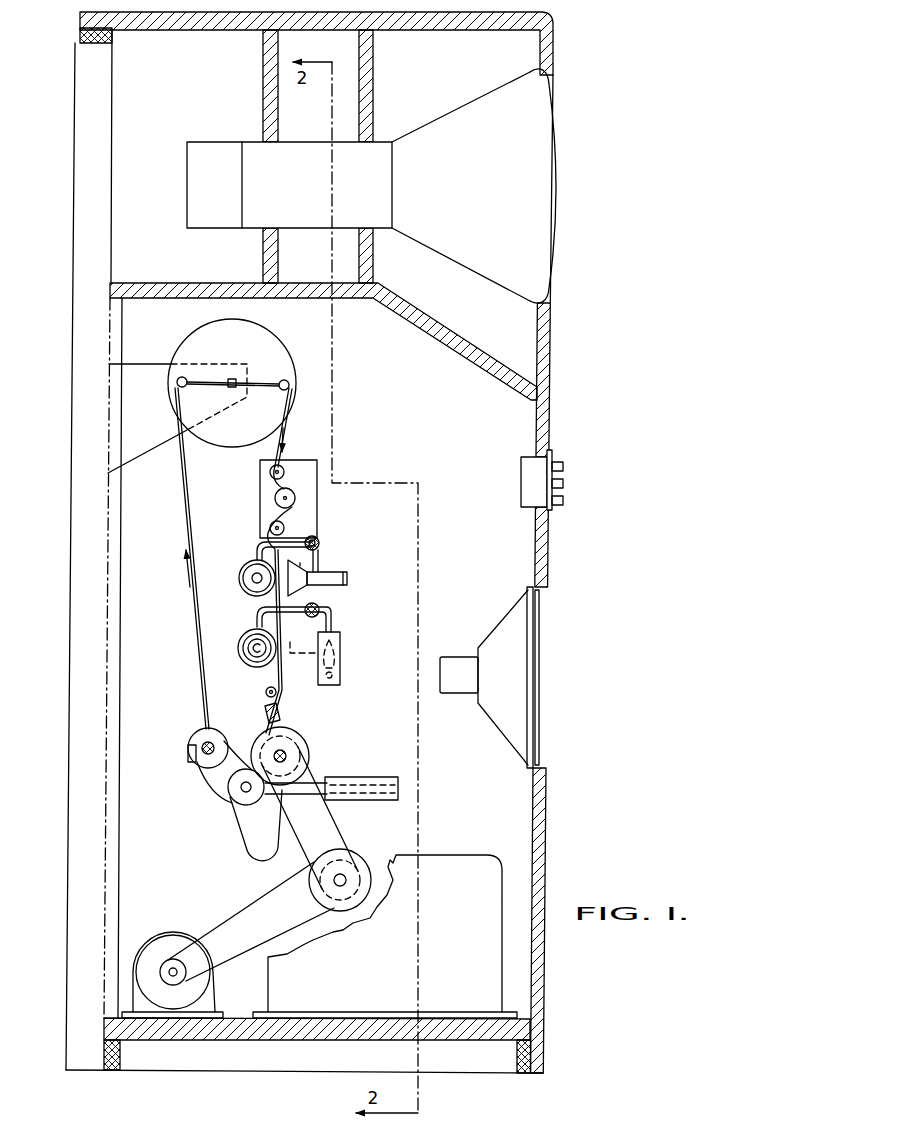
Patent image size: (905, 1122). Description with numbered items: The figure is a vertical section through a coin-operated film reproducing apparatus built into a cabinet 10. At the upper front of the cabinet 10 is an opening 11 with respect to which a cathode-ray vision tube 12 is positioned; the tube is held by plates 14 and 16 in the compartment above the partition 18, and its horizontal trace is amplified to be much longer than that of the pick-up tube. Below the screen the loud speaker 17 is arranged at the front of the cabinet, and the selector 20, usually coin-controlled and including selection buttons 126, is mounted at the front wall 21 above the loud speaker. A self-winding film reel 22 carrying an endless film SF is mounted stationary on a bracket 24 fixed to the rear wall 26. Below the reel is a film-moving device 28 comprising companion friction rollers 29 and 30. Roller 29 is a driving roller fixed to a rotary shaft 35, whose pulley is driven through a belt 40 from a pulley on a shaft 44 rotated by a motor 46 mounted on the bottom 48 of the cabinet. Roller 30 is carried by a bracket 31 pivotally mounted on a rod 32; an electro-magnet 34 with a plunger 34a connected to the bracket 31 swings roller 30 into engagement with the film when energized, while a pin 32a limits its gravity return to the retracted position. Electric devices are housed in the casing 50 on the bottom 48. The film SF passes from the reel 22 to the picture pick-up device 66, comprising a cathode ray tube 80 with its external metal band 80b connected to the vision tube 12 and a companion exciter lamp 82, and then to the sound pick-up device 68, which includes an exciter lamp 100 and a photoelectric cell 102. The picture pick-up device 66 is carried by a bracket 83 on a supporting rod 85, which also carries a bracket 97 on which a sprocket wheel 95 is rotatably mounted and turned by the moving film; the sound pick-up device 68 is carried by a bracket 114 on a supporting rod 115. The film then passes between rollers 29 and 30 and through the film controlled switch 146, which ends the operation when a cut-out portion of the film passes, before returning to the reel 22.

The cabinet 10 is at (560, 48).
The opening 11 is at (566, 191).
The cathode-ray vision tube 12 is at (520, 146).
The plate 14 is at (263, 86).
The plate 16 is at (374, 83).
The loud speaker 17 is at (512, 624).
The partition 18 is at (412, 314).
The selector 20 is at (560, 452).
The front wall 21 is at (547, 543).
The film reel 22 is at (272, 347).
The bracket 24 is at (140, 462).
The rear wall 26 is at (112, 527).
The film-moving device 28 is at (304, 744).
The roller 29 is at (293, 733).
The roller 30 is at (240, 806).
The bracket 31 is at (212, 774).
The rod 32 is at (203, 744).
The pin 32a is at (191, 755).
The electro-magnet 34 is at (375, 781).
The plunger 34a is at (298, 791).
The rotary shaft 35 is at (288, 757).
The belt 40 is at (338, 829).
The rotary shaft 44 is at (346, 878).
The motor 46 is at (160, 936).
The bottom 48 is at (158, 1030).
The casing 50 is at (353, 995).
The picture pick-up device 66 is at (328, 556).
The sound pick-up device 68 is at (285, 656).
The cathode ray tube 80 is at (328, 582).
The external metal band 80b is at (300, 565).
The exciter lamp 82 is at (246, 566).
The bracket 83 is at (316, 538).
The supporting rod 85 is at (320, 540).
The sprocket wheel 95 is at (296, 492).
The bracket 97 is at (300, 468).
The exciter lamp 100 is at (341, 655).
The photoelectric cell 102 is at (245, 657).
The bracket 114 is at (333, 624).
The supporting rod 115 is at (320, 610).
The button 126 is at (565, 500).
The film controlled switch 146 is at (264, 709).
The film SF is at (197, 597).